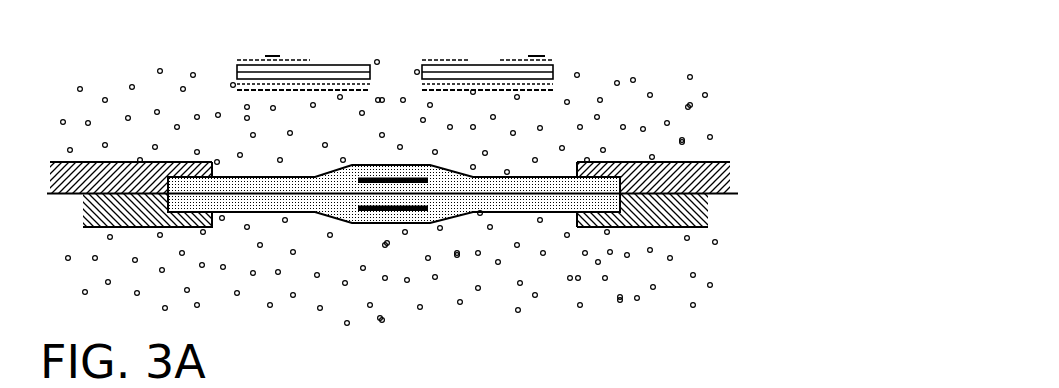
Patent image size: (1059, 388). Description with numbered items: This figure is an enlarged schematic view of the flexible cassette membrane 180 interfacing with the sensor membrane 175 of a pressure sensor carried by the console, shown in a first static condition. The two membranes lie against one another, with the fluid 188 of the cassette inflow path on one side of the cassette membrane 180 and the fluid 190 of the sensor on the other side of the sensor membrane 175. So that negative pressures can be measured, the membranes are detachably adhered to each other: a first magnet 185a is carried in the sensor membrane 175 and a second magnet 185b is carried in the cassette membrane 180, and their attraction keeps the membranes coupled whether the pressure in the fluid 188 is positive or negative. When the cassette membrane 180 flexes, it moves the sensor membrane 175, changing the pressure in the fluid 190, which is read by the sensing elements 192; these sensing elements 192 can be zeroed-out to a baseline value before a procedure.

The sensor membrane 175 is at (543, 178).
The cassette membrane 180 is at (500, 205).
The first magnet 185a is at (372, 176).
The second magnet 185b is at (390, 212).
The fluid 188 is at (580, 275).
The fluid 190 is at (672, 121).
The sensing elements 192 is at (437, 62).